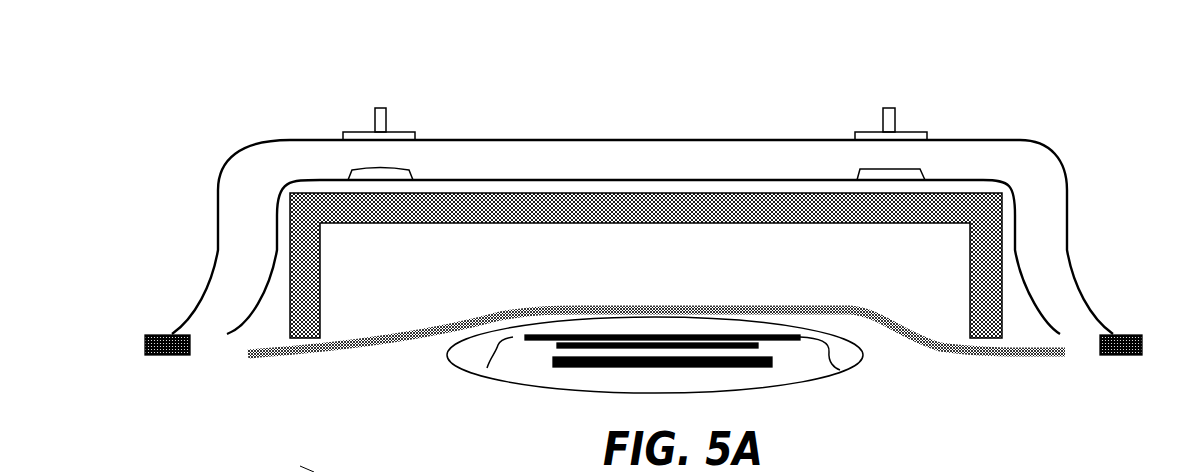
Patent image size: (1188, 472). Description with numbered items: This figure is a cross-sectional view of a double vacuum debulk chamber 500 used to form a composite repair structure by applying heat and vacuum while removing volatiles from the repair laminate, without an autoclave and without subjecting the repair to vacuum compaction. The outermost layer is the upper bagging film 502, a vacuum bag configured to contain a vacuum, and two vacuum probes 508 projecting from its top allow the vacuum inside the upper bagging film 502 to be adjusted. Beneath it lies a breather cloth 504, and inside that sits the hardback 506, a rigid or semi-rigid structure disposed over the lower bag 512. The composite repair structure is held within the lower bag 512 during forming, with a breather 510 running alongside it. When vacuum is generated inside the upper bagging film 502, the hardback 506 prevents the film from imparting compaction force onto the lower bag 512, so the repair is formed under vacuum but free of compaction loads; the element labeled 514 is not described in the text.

The double vacuum debulk chamber 500 is at (125, 75).
The upper bagging film 502 is at (290, 138).
The breather cloth 504 is at (267, 265).
The hardback 506 is at (1002, 242).
The vacuum probes 508 is at (880, 120).
The breather 510 is at (563, 308).
The lower bag 512 is at (868, 351).
The substrate 514 is at (314, 471).